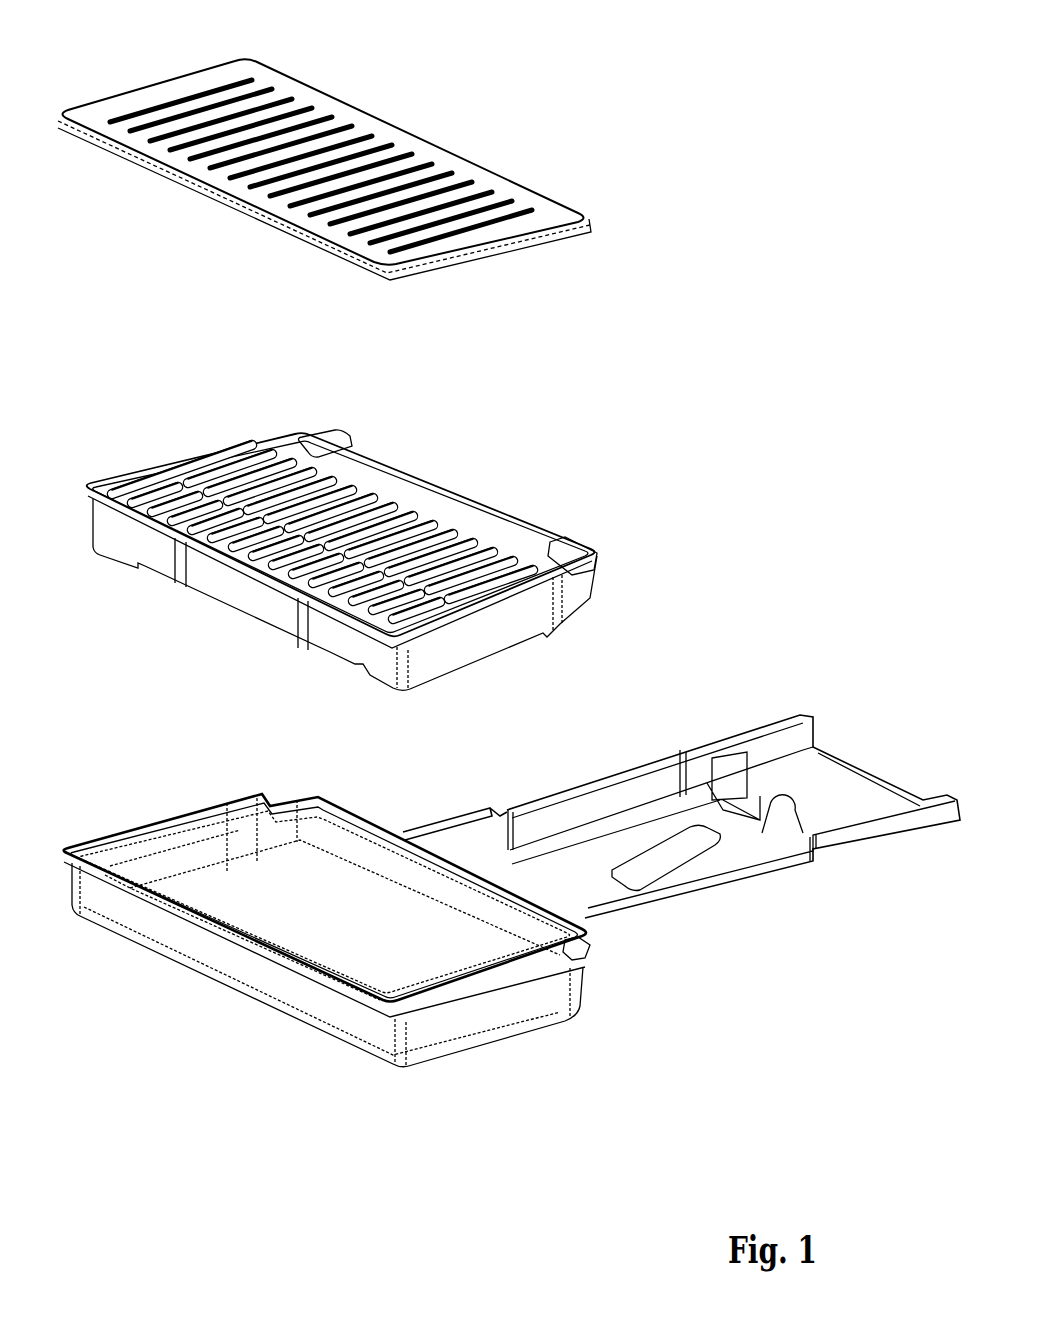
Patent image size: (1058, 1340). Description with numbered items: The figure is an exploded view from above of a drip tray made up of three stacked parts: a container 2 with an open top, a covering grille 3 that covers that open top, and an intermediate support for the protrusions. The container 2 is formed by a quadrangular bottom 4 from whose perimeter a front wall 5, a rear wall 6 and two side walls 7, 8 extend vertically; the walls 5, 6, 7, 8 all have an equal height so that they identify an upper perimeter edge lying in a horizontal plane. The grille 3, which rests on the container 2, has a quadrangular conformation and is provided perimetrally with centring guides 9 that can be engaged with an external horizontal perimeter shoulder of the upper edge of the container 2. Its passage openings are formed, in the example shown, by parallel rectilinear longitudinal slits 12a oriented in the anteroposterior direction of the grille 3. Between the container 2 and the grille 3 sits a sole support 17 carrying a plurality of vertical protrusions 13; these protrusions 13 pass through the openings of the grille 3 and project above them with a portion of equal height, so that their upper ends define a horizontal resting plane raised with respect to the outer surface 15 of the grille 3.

The container 2 is at (499, 925).
The covering grille 3 is at (372, 168).
The quadrangular bottom 4 is at (233, 897).
The front wall 5 is at (350, 1020).
The rear wall 6 is at (362, 833).
The side wall 7 is at (495, 1020).
The side wall 8 is at (143, 850).
The centring guides 9 is at (153, 82).
The longitudinal slits 12a is at (393, 253).
The vertical protrusions 13 is at (212, 470).
The outer surface 15 is at (233, 187).
The sole support 17 is at (349, 531).